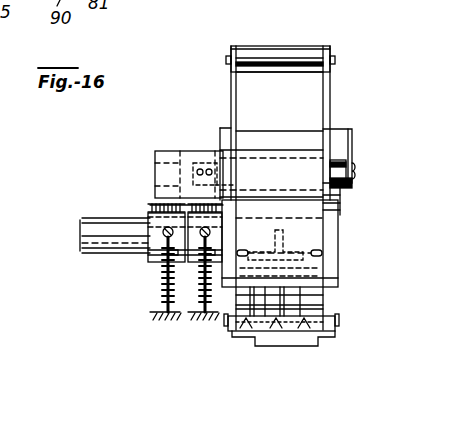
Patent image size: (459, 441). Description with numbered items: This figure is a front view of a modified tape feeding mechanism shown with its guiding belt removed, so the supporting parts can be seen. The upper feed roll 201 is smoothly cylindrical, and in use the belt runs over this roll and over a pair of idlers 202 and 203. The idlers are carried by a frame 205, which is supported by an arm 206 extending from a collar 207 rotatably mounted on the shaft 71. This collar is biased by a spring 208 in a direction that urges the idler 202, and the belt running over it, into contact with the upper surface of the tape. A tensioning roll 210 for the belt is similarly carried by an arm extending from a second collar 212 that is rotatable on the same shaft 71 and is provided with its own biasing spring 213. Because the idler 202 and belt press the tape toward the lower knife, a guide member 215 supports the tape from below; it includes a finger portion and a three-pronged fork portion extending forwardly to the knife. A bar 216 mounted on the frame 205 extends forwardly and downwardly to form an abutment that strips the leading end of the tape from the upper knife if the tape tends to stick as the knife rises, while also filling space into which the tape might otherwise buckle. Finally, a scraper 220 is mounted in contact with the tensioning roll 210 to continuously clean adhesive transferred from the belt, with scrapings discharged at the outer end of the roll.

The shaft 71 is at (96, 222).
The upper feed roll 201 is at (332, 240).
The idler 202 is at (320, 322).
The idler 203 is at (277, 49).
The frame 205 is at (331, 88).
The arm 206 is at (190, 150).
The collar 207 is at (150, 206).
The spring 208 is at (166, 295).
The tensioning roll 210 is at (340, 170).
The collar 212 is at (193, 213).
The biasing spring 213 is at (204, 300).
The guide member 215 is at (306, 298).
The bar 216 is at (258, 340).
The scraper 220 is at (306, 135).